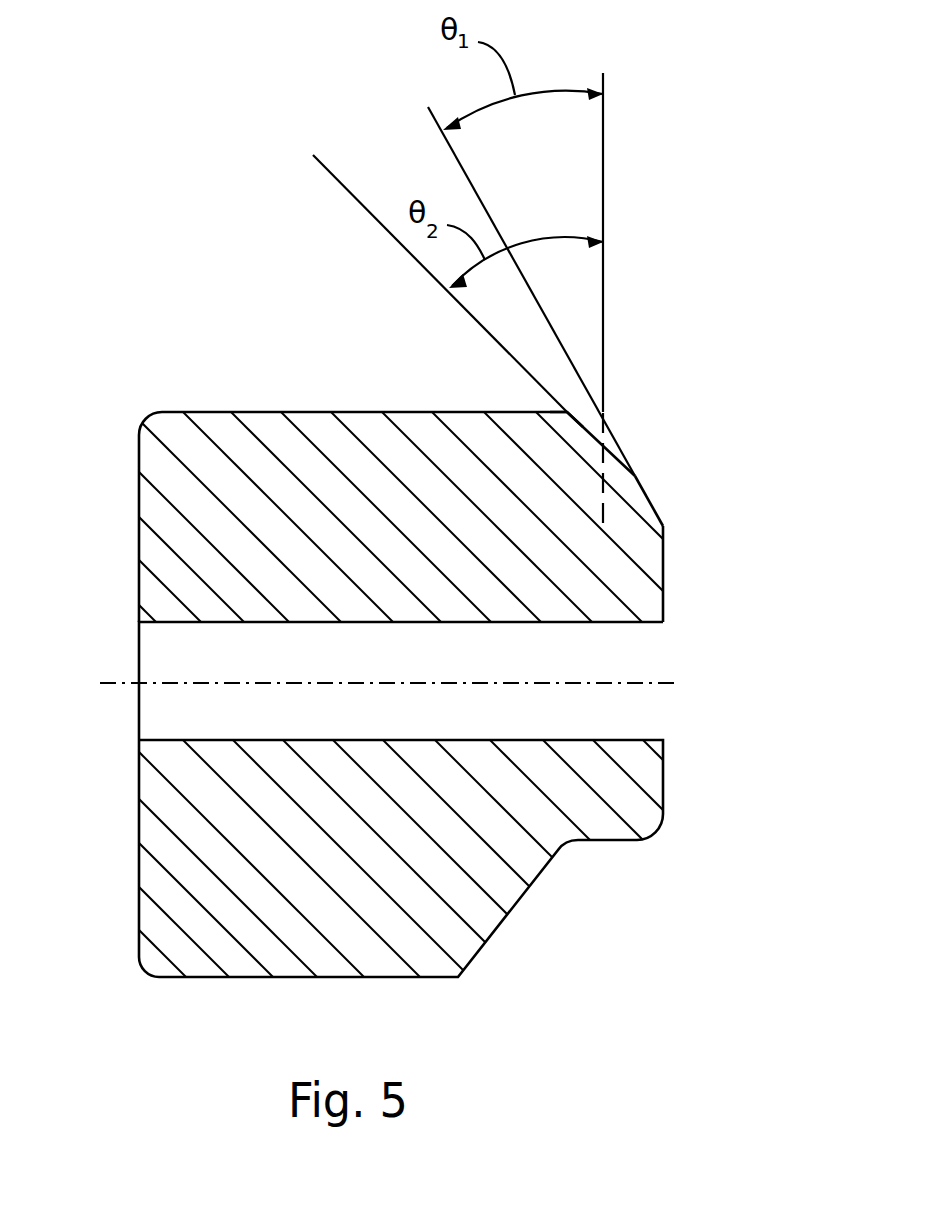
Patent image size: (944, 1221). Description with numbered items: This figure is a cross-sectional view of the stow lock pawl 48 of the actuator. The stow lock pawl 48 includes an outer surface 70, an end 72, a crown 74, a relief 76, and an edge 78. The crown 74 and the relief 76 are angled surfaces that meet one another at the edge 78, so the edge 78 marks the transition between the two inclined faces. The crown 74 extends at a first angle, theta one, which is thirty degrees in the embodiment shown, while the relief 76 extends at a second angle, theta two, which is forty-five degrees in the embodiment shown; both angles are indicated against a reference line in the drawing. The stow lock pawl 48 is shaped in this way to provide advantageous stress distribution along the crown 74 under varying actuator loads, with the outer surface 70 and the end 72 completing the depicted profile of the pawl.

The stow lock pawl 48 is at (446, 582).
The outer surface 70 is at (446, 652).
The end 72 is at (663, 575).
The crown 74 is at (650, 503).
The relief 76 is at (578, 418).
The edge 78 is at (633, 475).